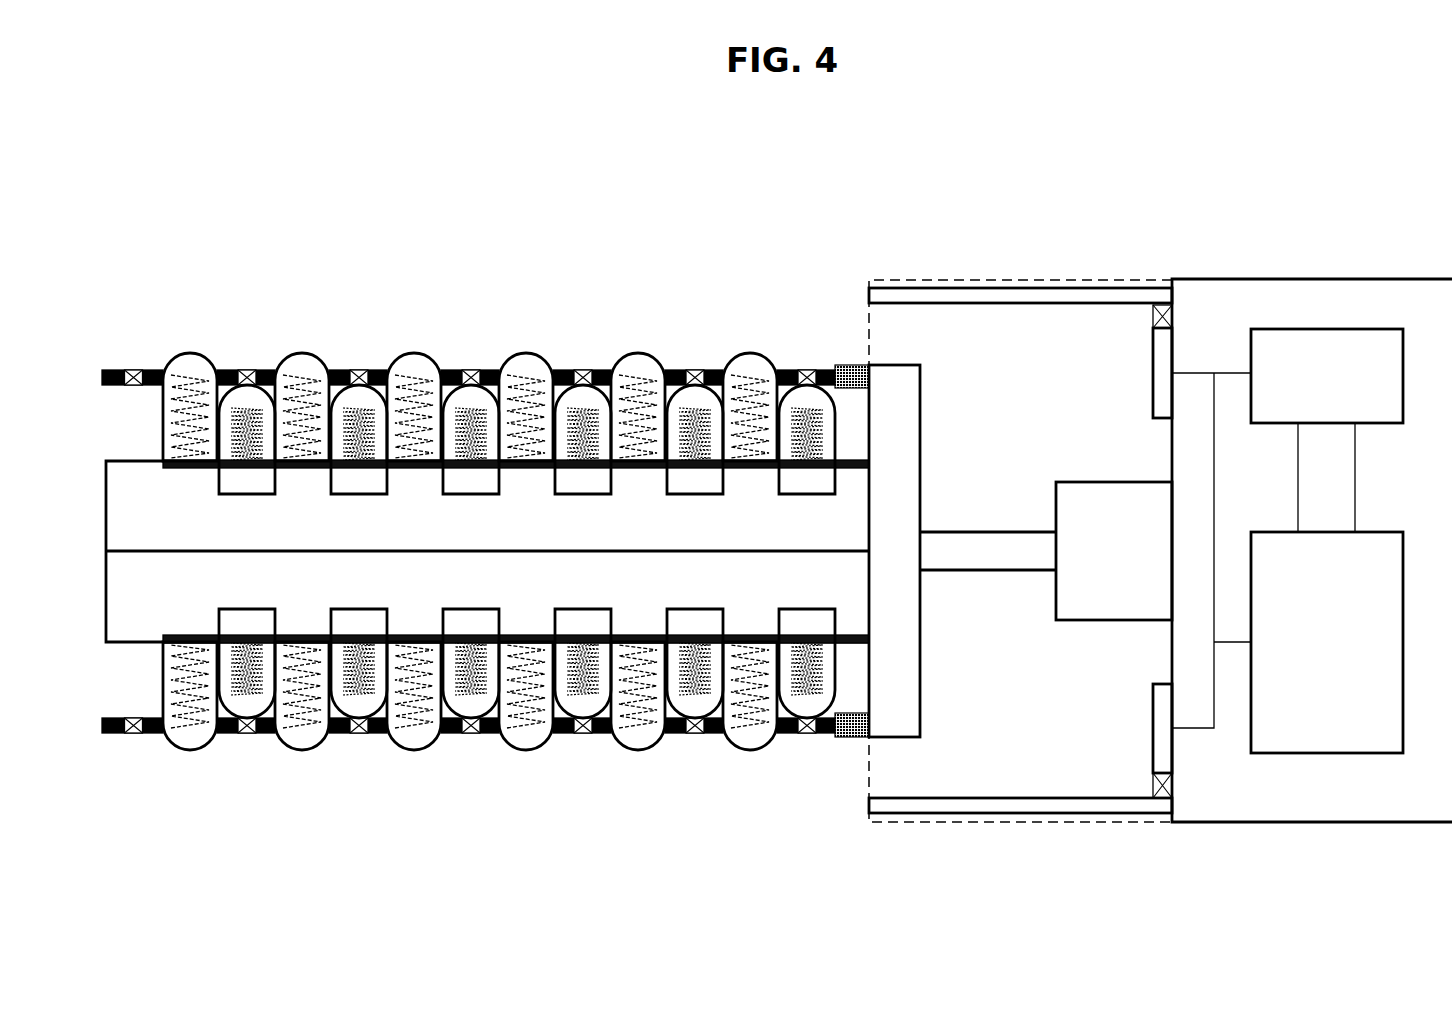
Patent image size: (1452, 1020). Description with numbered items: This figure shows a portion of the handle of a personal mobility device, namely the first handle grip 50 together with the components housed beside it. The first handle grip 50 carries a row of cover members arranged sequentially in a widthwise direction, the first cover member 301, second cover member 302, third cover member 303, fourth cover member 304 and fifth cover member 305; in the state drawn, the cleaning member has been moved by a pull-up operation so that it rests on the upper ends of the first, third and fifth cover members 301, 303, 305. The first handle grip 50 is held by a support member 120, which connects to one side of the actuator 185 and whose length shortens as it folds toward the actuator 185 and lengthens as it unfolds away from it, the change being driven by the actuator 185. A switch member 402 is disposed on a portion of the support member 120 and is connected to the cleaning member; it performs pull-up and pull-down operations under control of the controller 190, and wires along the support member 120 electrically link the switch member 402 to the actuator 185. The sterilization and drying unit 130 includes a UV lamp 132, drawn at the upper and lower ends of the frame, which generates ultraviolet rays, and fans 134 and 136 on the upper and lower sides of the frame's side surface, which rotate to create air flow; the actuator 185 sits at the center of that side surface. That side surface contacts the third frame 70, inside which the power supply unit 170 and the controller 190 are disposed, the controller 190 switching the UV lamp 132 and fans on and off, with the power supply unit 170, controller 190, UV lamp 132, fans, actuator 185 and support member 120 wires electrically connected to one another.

The first handle grip 50 is at (391, 298).
The first cover member 301 is at (807, 388).
The second cover member 302 is at (751, 362).
The third cover member 303 is at (697, 388).
The fourth cover member 304 is at (639, 362).
The fifth cover member 305 is at (584, 388).
The switch member 402 is at (840, 745).
The support member 120 is at (962, 540).
The sterilization and drying unit 130 is at (1040, 280).
The UV lamp 132 is at (961, 298).
The fan 134 is at (1157, 378).
The fan 136 is at (1157, 721).
The third frame 70 is at (1333, 279).
The power supply unit 170 is at (1327, 376).
The actuator 185 is at (1114, 551).
The controller 190 is at (1327, 642).